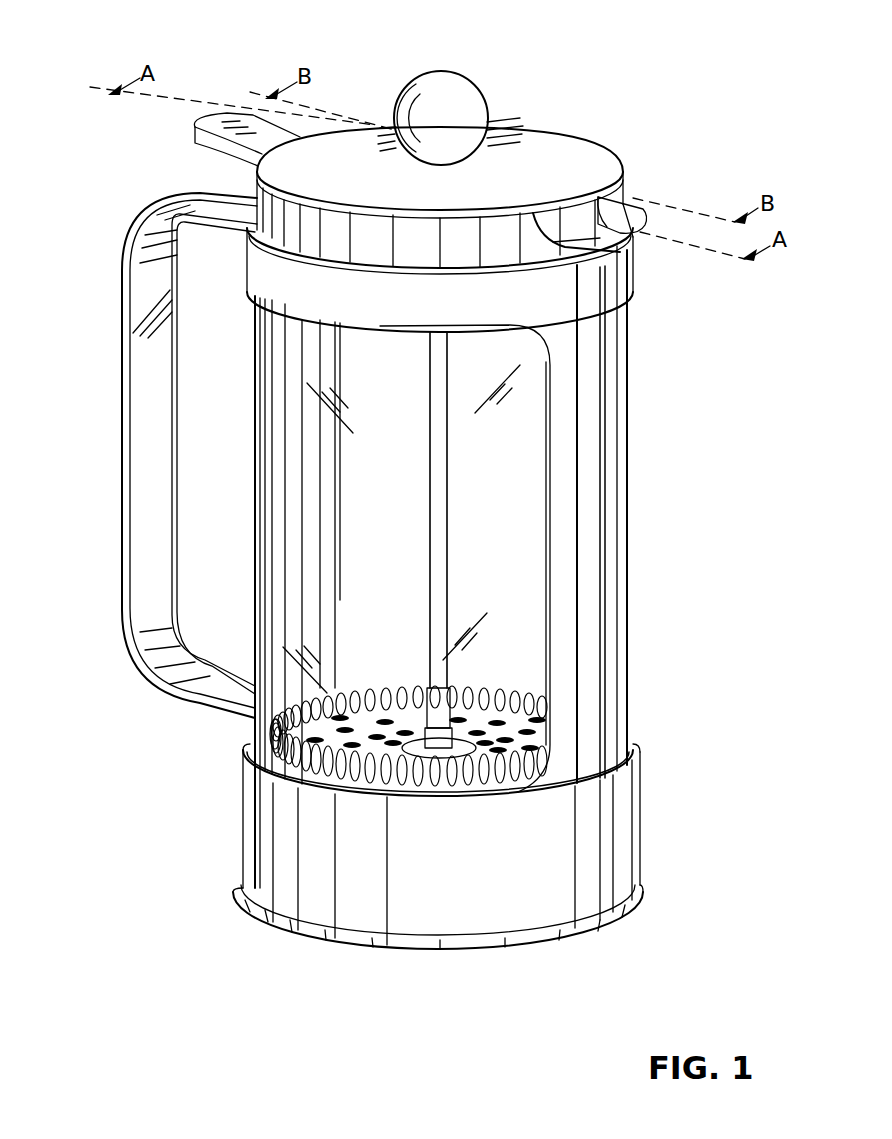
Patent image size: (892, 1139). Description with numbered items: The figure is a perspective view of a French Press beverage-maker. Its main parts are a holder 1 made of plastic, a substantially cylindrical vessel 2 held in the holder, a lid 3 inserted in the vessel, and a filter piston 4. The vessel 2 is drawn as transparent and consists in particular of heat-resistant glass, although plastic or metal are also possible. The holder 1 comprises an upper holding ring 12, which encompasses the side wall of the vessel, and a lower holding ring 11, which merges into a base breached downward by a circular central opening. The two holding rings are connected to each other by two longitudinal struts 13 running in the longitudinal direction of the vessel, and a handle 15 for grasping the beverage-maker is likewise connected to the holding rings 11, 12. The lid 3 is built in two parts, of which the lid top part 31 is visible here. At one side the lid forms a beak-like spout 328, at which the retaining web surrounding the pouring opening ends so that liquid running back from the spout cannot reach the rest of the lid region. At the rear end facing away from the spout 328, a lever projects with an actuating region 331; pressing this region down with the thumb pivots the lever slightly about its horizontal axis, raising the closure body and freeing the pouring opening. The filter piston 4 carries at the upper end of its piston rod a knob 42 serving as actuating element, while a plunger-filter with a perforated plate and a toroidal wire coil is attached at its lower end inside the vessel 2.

The holder 1 is at (665, 841).
The vessel 2 is at (613, 548).
The lid 3 is at (628, 139).
The filter piston 4 is at (475, 517).
The lower holding ring 11 is at (248, 813).
The upper holding ring 12 is at (632, 293).
The longitudinal struts 13 is at (592, 647).
The handle 15 is at (150, 552).
The lid top part 31 is at (512, 138).
The knob 42 is at (432, 103).
The spout 328 is at (638, 265).
The actuating region 331 is at (218, 140).